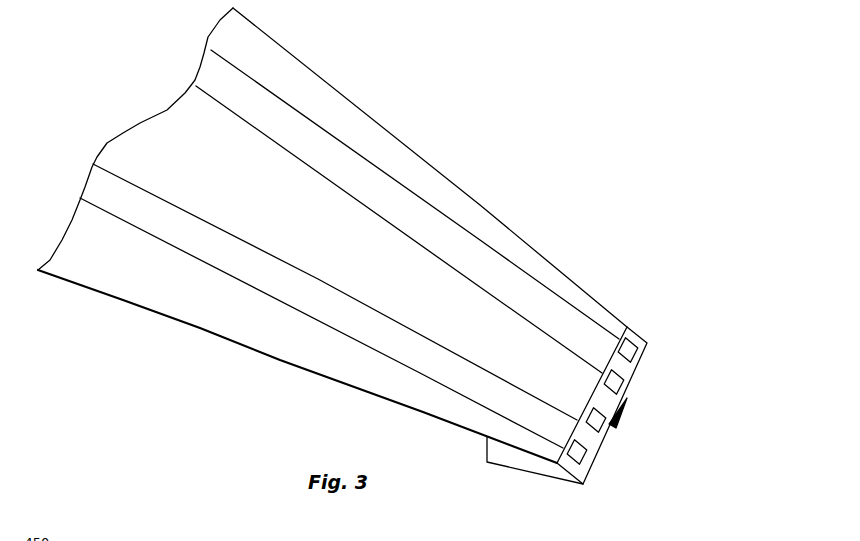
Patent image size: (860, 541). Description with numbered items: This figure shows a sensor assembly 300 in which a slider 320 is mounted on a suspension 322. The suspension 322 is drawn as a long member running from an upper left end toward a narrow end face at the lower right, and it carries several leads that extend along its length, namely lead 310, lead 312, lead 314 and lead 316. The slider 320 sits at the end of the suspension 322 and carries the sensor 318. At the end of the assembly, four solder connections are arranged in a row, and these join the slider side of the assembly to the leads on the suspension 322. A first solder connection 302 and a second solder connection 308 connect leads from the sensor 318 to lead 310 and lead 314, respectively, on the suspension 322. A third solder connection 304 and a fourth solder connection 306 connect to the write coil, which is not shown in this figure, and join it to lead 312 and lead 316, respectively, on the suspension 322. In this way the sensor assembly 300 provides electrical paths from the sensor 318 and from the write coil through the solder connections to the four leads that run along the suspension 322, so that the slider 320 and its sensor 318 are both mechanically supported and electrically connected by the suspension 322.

The sensor assembly 300 is at (190, 397).
The first solder connection 302 is at (572, 464).
The third solder connection 304 is at (601, 438).
The fourth solder connection 306 is at (620, 378).
The second solder connection 308 is at (647, 343).
The lead 310 is at (295, 302).
The lead 312 is at (433, 336).
The lead 314 is at (488, 250).
The lead 316 is at (542, 325).
The sensor 318 is at (617, 410).
The slider 320 is at (518, 460).
The suspension 322 is at (423, 410).